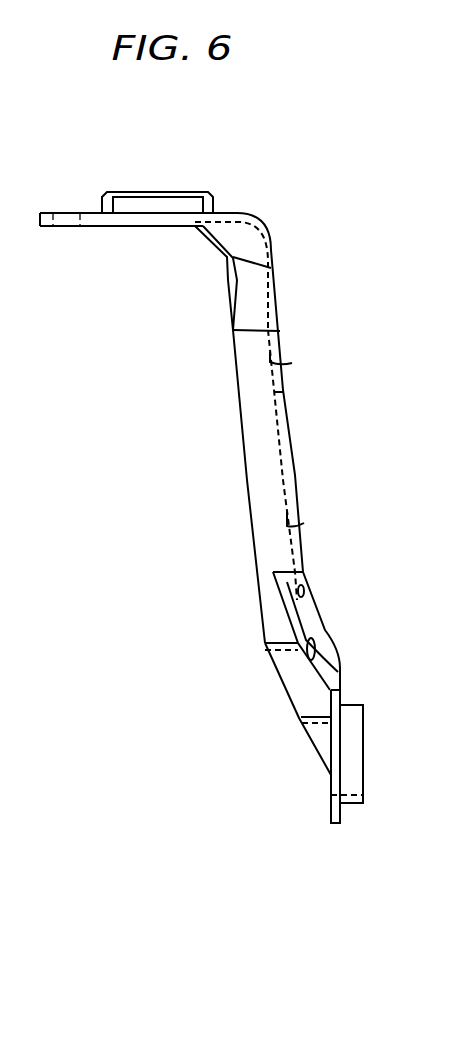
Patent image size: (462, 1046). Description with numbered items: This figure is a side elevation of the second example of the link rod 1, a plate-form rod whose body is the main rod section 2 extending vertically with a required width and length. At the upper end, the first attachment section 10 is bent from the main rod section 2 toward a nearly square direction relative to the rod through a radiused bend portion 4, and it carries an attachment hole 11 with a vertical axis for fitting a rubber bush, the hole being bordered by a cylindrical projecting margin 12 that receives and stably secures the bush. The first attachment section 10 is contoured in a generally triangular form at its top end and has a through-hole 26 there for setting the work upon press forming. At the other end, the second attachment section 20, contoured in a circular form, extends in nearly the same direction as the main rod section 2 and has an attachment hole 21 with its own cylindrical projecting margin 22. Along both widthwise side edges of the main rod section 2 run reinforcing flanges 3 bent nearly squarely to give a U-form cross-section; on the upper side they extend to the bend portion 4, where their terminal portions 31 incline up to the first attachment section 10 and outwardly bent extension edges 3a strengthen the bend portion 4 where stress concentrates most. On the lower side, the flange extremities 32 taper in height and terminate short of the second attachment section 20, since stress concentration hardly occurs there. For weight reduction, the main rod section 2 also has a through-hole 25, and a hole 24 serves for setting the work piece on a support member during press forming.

The link rod 1 is at (300, 155).
The main rod section 2 is at (297, 474).
The reinforcing flange 3 is at (250, 446).
The extension edge 3a is at (274, 256).
The bend portion 4 is at (258, 223).
The first attachment section 10 is at (73, 232).
The attachment hole 11 is at (113, 203).
The cylindrical projecting margin 12 is at (152, 204).
The second attachment section 20 is at (328, 810).
The attachment hole 21 is at (352, 796).
The cylindrical projecting margin 22 is at (350, 752).
The hole 24 is at (292, 363).
The through-hole 25 is at (306, 580).
The through-hole 26 is at (68, 213).
The terminal portion 31 is at (203, 231).
The terminal portion 32 is at (316, 614).